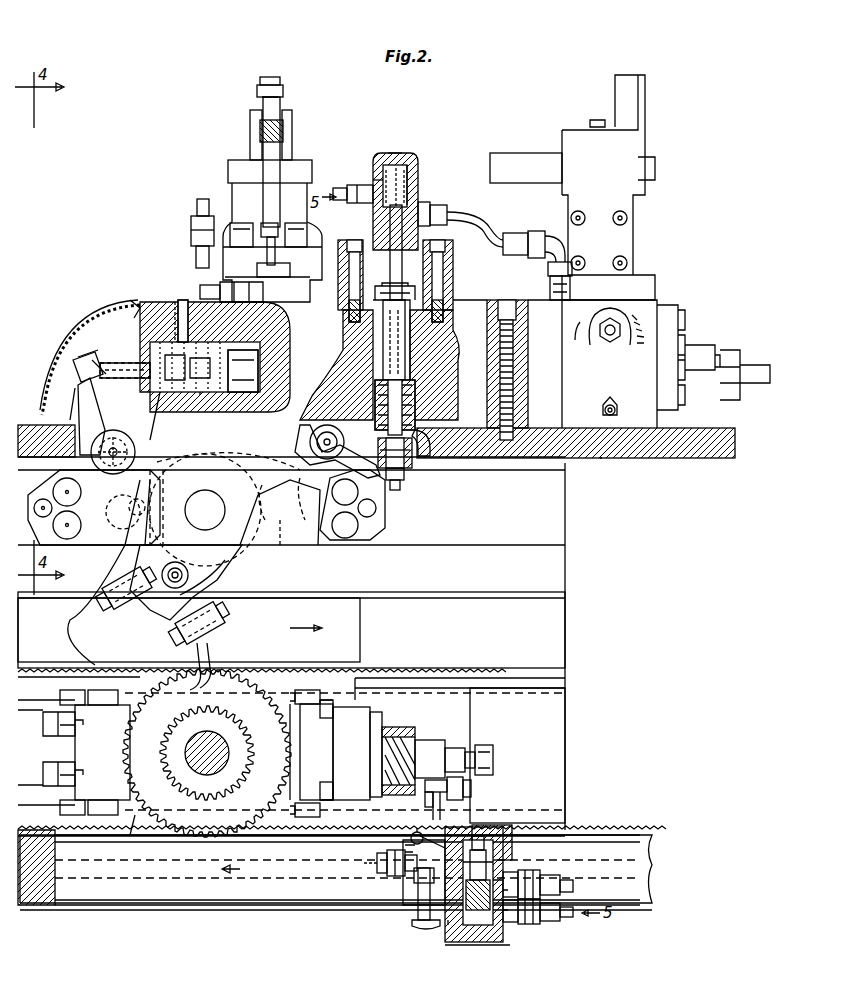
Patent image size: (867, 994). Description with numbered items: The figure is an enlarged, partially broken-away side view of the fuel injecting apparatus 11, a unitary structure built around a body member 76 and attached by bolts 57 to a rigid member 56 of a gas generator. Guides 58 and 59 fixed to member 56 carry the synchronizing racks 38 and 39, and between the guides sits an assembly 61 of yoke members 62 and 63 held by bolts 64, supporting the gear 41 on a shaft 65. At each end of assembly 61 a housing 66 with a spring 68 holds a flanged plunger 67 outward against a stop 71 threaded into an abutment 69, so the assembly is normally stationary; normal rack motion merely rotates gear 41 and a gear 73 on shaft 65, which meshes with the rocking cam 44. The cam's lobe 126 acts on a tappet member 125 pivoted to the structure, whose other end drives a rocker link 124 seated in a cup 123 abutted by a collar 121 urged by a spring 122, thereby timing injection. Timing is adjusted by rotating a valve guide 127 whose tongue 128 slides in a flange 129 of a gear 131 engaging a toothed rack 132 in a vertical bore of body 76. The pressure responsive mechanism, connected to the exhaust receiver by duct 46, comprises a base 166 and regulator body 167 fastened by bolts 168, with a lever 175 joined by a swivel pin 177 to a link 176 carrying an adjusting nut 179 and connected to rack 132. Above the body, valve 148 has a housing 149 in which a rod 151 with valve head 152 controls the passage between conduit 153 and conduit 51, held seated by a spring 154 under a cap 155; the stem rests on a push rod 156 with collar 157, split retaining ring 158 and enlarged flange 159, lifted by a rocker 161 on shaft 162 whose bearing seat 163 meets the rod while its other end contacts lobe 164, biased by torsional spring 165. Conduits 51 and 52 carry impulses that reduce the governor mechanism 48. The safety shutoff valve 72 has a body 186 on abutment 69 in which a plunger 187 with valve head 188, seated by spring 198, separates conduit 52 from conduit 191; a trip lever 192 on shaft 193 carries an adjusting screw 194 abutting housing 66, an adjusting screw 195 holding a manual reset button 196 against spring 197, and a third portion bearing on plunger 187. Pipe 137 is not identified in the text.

The fuel injecting apparatus 11 is at (672, 296).
The synchronizing rack 38 is at (635, 840).
The synchronizing rack 39 is at (362, 630).
The gear 41 is at (235, 800).
The rocking cam 44 is at (215, 592).
The duct 46 is at (198, 207).
The governor mechanism 48 is at (650, 201).
The conduit 51 is at (470, 232).
The conduit 52 is at (546, 285).
The rigid member 56 is at (598, 460).
The bolts 57 is at (505, 302).
The guide 58 is at (495, 592).
The guide 59 is at (370, 905).
The assembly 61 is at (368, 692).
The yoke member 62 is at (326, 728).
The yoke member 63 is at (330, 790).
The bolts 64 is at (105, 805).
The shaft 65 is at (200, 770).
The housing 66 is at (408, 735).
The flanged plunger 67 is at (428, 745).
The spring 68 is at (388, 725).
The abutment 69 is at (560, 722).
The stop 71 is at (450, 748).
The safety shutoff valve 72 is at (468, 942).
The gear 73 is at (225, 778).
The body member 76 is at (462, 300).
The collar 121 is at (119, 416).
The spring 122 is at (205, 395).
The cup 123 is at (140, 370).
The rocker link 124 is at (102, 360).
The tappet member 125 is at (115, 430).
The cam lobe 126 is at (155, 571).
The valve guide 127 is at (185, 395).
The tongue 128 is at (218, 345).
The flange 129 is at (246, 345).
The gear 131 is at (258, 375).
The toothed rack 132 is at (310, 332).
The pipe 137 is at (522, 152).
The valve 148 is at (420, 185).
The housing 149 is at (374, 178).
The rod 151 is at (365, 240).
The valve head 152 is at (426, 205).
The conduit 153 is at (340, 188).
The spring 154 is at (395, 160).
The cap 155 is at (412, 160).
The push rod 156 is at (400, 345).
The collar 157 is at (452, 460).
The split retaining ring 158 is at (410, 460).
The enlarged flange 159 is at (420, 292).
The rocker 161 is at (325, 470).
The shaft 162 is at (308, 462).
The semi-spherical bearing seat 163 is at (428, 458).
The lobe 164 is at (275, 482).
The torsional spring 165 is at (393, 482).
The base 166 is at (222, 278).
The regulator body 167 is at (232, 204).
The bolts 168 is at (241, 232).
The lever 175 is at (285, 118).
The link 176 is at (272, 216).
The swivel pin 177 is at (276, 130).
The adjusting nut 179 is at (272, 92).
The valve body 186 is at (504, 860).
The plunger 187 is at (480, 828).
The valve head 188 is at (450, 925).
The conduit 191 is at (575, 918).
The trip lever 192 is at (435, 800).
The shaft 193 is at (400, 848).
The adjusting screw 194 is at (465, 785).
The adjusting screw 195 is at (378, 872).
The manual reset button 196 is at (420, 928).
The spring 197 is at (418, 900).
The spring 198 is at (488, 936).